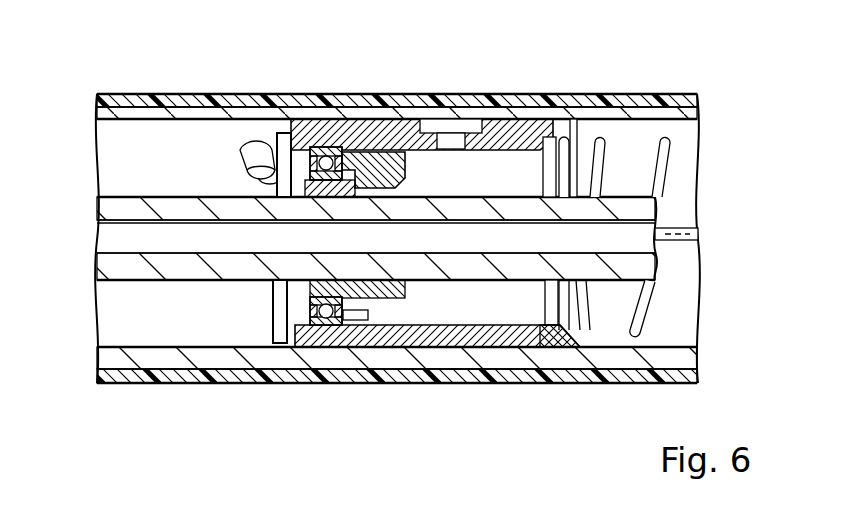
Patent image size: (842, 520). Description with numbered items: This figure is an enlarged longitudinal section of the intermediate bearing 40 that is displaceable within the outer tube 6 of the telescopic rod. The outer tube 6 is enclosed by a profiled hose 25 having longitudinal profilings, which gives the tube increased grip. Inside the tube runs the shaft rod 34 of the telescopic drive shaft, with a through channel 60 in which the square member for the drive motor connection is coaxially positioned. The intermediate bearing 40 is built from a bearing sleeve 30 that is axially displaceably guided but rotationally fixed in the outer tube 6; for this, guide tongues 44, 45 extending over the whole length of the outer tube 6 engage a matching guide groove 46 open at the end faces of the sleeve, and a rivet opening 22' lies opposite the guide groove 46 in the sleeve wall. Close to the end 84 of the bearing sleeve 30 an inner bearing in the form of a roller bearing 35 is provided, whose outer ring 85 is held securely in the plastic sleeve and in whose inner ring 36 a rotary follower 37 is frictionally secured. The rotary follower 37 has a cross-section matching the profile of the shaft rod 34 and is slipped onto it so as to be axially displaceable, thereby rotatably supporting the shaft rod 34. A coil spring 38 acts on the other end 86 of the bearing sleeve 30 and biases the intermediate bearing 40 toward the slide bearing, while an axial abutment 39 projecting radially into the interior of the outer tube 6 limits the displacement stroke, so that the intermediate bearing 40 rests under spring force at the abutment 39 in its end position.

The outer tube 6 is at (128, 106).
The rivet opening 22' is at (451, 88).
The profiled hose 25 is at (151, 374).
The bearing sleeve 30 is at (492, 120).
The shaft rod 34 is at (122, 266).
The roller bearing 35 is at (320, 138).
The inner ring 36 is at (310, 316).
The rotary follower 37 is at (382, 152).
The coil spring 38 is at (600, 158).
The axial abutment 39 is at (258, 180).
The intermediate bearing 40 is at (522, 112).
The guide tongue 44 is at (672, 232).
The guide tongue 45 is at (672, 351).
The guide groove 46 is at (462, 358).
The through channel 60 is at (122, 232).
The end of the bearing sleeve 84 is at (266, 317).
The outer ring 85 is at (333, 320).
The end of the bearing sleeve 86 is at (598, 312).